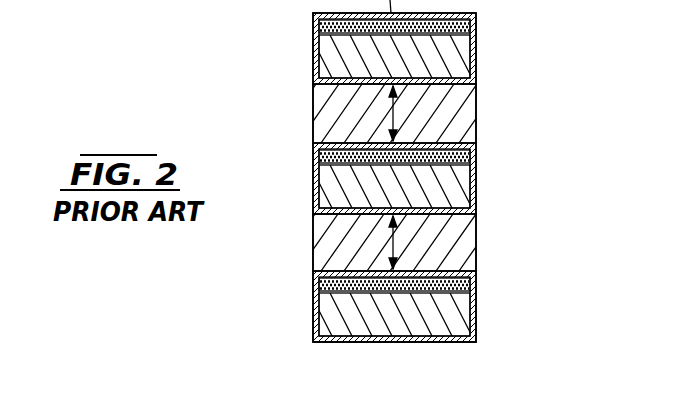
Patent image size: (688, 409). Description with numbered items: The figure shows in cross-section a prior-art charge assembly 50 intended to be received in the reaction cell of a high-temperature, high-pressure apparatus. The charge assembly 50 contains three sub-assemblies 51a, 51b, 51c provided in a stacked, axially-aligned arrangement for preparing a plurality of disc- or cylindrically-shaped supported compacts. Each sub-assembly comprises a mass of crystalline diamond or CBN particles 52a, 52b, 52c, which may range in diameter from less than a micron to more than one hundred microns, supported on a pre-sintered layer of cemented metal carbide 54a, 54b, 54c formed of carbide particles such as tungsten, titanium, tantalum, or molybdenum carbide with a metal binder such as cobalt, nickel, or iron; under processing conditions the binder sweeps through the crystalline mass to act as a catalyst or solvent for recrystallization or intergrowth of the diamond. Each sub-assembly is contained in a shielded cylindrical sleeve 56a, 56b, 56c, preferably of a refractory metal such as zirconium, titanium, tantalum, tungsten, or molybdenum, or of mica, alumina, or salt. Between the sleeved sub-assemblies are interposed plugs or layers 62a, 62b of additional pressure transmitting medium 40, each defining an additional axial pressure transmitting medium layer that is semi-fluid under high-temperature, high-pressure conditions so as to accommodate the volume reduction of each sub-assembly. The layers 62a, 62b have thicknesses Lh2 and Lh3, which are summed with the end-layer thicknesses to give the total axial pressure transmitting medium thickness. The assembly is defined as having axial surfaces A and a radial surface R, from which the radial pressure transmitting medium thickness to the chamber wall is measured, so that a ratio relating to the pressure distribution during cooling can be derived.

The charge assembly 50 is at (565, 141).
The pressure transmitting medium 40 is at (317, 108).
The sub-assembly 51a is at (313, 60).
The sub-assembly 51b is at (313, 172).
The sub-assembly 51c is at (313, 313).
The mass of crystalline diamond or CBN particles 52a is at (467, 25).
The mass of crystalline diamond or CBN particles 52b is at (476, 155).
The mass of crystalline diamond or CBN particles 52c is at (467, 283).
The cemented metal carbide layer 54a is at (460, 63).
The cemented metal carbide layer 54b is at (463, 193).
The cemented metal carbide layer 54c is at (457, 318).
The shielded cylindrical sleeve 56a is at (313, 32).
The shielded cylindrical sleeve 56b is at (313, 196).
The shielded cylindrical sleeve 56c is at (313, 325).
The pressure transmitting layer 62a is at (463, 122).
The pressure transmitting layer 62b is at (463, 243).
The thickness of axial pressure transmitting medium layer Lh2 is at (395, 114).
The thickness of axial pressure transmitting medium layer Lh3 is at (395, 245).
The radial surface R is at (313, 223).
The axial surface A is at (392, 343).